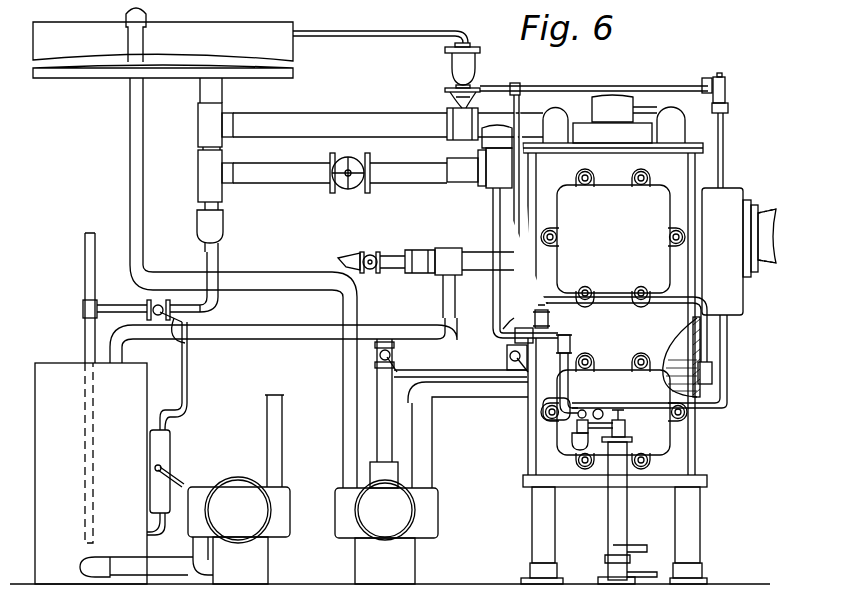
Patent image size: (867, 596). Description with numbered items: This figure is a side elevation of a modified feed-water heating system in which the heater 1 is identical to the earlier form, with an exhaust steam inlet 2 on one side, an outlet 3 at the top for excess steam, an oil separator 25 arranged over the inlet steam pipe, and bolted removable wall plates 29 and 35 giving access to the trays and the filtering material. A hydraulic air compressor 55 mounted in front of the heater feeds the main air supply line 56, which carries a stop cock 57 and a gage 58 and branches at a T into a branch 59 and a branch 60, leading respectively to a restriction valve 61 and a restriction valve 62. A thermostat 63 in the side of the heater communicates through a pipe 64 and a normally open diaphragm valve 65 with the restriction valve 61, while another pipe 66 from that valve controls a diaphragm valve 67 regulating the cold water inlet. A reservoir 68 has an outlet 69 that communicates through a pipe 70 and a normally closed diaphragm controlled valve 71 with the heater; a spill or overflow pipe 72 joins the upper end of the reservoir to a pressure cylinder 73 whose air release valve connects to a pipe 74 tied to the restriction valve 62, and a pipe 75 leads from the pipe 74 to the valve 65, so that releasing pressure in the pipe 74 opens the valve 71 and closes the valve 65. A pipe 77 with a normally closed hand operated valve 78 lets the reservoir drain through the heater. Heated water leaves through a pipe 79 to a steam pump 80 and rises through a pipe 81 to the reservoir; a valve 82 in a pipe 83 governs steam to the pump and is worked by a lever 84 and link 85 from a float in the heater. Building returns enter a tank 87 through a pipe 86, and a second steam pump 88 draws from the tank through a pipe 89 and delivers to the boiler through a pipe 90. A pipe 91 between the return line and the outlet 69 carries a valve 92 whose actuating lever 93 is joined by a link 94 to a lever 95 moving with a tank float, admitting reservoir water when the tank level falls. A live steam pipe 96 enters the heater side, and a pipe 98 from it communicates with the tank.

The heater 1 is at (614, 446).
The inlet 2 is at (767, 236).
The outlet 3 is at (614, 119).
The oil separator 25 is at (730, 251).
The removable wall plate 29 is at (613, 309).
The removable wall plate 35 is at (672, 413).
The hydraulic air compressor 55 is at (610, 515).
The main air supply line 56 is at (615, 419).
The stop cock 57 is at (577, 430).
The gage 58 is at (581, 451).
The branch 59 is at (569, 388).
The branch 60 is at (728, 340).
The restriction valve 61 is at (572, 342).
The restriction valve 62 is at (726, 97).
The thermostat 63 is at (713, 378).
The pipe 64 is at (618, 298).
The diaphragm valve 65 is at (550, 321).
The pipe 66 is at (503, 296).
The diaphragm valve 67 is at (513, 190).
The reservoir 68 is at (163, 43).
The outlet 69 is at (205, 95).
The pipe 70 is at (345, 113).
The diaphragm controlled valve 71 is at (447, 90).
The spill or overflow pipe 72 is at (400, 31).
The pressure cylinder 73 is at (450, 63).
The pipe 74 is at (535, 87).
The pipe 75 is at (496, 225).
The pipe 77 is at (288, 183).
The hand operated valve 78 is at (365, 190).
The pipe 79 is at (490, 398).
The steam pump 80 is at (386, 532).
The pipe 81 is at (130, 175).
The valve 82 is at (395, 353).
The pipe 83 is at (378, 410).
The lever 84 is at (513, 336).
The link 85 is at (437, 377).
The pipe 86 is at (87, 268).
The tank 87 is at (91, 473).
The steam pump 88 is at (239, 530).
The pipe 89 is at (165, 568).
The pipe 90 is at (283, 465).
The pipe 91 is at (122, 306).
The valve 92 is at (160, 300).
The actuating lever 93 is at (186, 343).
The link 94 is at (188, 376).
The lever 95 is at (183, 468).
The live steam pipe 96 is at (480, 271).
The pipe 98 is at (303, 325).